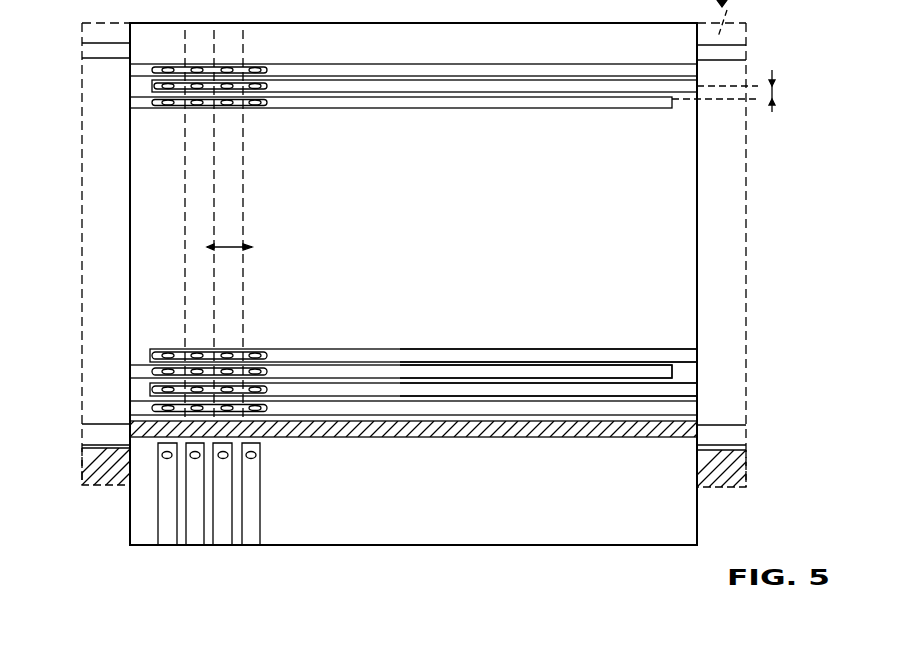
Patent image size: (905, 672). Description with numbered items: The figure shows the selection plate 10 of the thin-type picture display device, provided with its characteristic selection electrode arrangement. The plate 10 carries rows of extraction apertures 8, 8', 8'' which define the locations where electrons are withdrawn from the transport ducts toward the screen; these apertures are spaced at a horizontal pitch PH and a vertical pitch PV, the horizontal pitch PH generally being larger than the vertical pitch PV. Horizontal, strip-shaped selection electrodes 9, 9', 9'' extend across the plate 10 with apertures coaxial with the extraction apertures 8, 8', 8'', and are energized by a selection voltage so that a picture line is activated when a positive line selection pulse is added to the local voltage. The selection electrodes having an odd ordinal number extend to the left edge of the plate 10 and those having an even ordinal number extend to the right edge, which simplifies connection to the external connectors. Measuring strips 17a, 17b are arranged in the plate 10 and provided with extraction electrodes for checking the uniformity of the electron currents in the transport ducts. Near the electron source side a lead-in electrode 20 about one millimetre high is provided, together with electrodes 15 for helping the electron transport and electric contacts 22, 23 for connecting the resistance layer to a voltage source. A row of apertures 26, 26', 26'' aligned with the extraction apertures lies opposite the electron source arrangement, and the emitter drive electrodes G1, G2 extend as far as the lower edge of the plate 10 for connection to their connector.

The selection plate 10 is at (185, 145).
The electric contact 23 is at (735, 53).
The measuring strip 17b is at (133, 68).
The vertical pitch PV is at (775, 92).
The horizontal pitch PH is at (232, 246).
The extraction aperture 8'' is at (423, 337).
The extraction aperture 8' is at (356, 363).
The extraction aperture 8 is at (368, 390).
The measuring strip 17a is at (133, 407).
The selection electrode 9'' is at (548, 337).
The selection electrode 9' is at (536, 345).
The selection electrode 9 is at (548, 354).
The lead-in electrode 20 is at (690, 428).
The electric contact 22 is at (90, 433).
The electrode 15 is at (728, 470).
The emitter drive electrode G1 is at (168, 532).
The emitter drive electrode G2 is at (197, 532).
The aperture 26 is at (121, 486).
The aperture 26' is at (138, 505).
The aperture 26'' is at (246, 521).